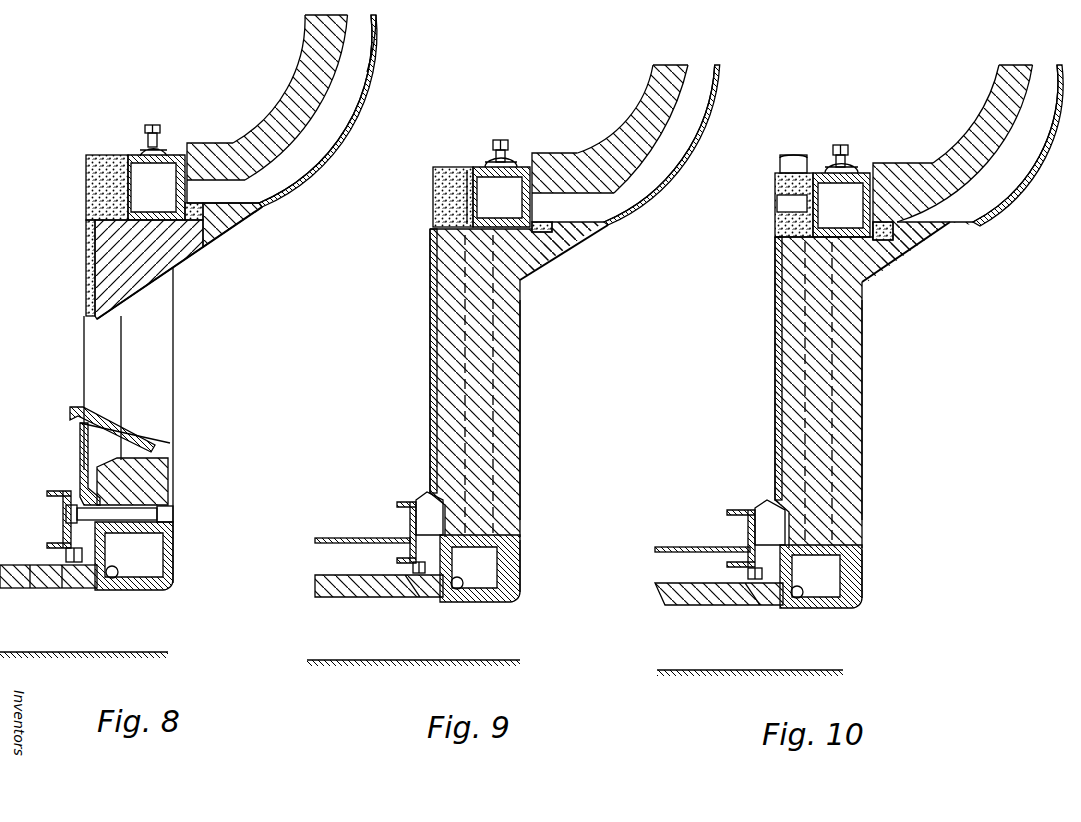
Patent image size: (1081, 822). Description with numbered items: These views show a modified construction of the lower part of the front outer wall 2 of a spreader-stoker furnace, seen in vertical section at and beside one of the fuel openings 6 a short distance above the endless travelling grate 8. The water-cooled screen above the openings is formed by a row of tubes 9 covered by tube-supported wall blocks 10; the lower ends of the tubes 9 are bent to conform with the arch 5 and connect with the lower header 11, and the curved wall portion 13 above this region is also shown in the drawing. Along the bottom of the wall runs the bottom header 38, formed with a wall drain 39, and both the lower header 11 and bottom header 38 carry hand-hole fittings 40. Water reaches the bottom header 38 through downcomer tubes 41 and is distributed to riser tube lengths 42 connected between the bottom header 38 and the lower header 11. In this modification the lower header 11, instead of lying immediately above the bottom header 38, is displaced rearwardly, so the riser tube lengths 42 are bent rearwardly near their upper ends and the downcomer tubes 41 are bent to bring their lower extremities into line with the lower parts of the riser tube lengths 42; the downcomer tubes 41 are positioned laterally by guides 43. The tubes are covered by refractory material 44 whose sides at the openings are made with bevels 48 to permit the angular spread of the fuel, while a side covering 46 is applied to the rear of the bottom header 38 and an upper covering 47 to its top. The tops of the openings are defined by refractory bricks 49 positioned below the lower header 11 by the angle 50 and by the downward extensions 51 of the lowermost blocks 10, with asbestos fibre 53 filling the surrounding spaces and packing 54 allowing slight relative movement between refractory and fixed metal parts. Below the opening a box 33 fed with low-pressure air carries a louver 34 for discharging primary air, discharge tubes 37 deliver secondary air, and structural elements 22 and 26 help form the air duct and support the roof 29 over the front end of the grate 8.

In FIG. 8, the front outer wall 2 is at (373, 58).
In FIG. 8, the arch 5 is at (227, 145).
In FIG. 9, the arch 5 is at (593, 232).
In FIG. 10, the arch 5 is at (960, 210).
In FIG. 8, the openings 6 is at (162, 332).
In FIG. 8, the endless travelling grate 8 is at (133, 652).
In FIG. 9, the endless travelling grate 8 is at (452, 660).
In FIG. 10, the endless travelling grate 8 is at (777, 670).
In FIG. 8, the tubes 9 is at (345, 98).
In FIG. 9, the tubes 9 is at (695, 100).
In FIG. 10, the tubes 9 is at (990, 170).
In FIG. 8, the tube-supported wall blocks 10 is at (355, 128).
In FIG. 9, the tube-supported wall blocks 10 is at (712, 128).
In FIG. 10, the tube-supported wall blocks 10 is at (1028, 170).
In FIG. 8, the lower header 11 is at (145, 175).
In FIG. 9, the lower header 11 is at (488, 190).
In FIG. 10, the lower header 11 is at (823, 197).
In FIG. 8, the curved wall 13 is at (300, 90).
In FIG. 9, the curved wall 13 is at (643, 112).
In FIG. 10, the curved wall 13 is at (970, 140).
In FIG. 8, the structural element 22 is at (58, 492).
In FIG. 9, the structural element 22 is at (407, 503).
In FIG. 10, the structural element 22 is at (740, 512).
In FIG. 9, the structural element 26 is at (318, 538).
In FIG. 10, the structural element 26 is at (670, 548).
In FIG. 8, the roof 29 is at (17, 566).
In FIG. 9, the roof 29 is at (360, 577).
In FIG. 10, the roof 29 is at (698, 590).
In FIG. 8, the box 33 is at (100, 450).
In FIG. 8, the louver 34 is at (100, 427).
In FIG. 8, the discharge tubes 37 is at (163, 517).
In FIG. 8, the bottom header 38 is at (140, 553).
In FIG. 9, the bottom header 38 is at (480, 560).
In FIG. 10, the bottom header 38 is at (827, 565).
In FIG. 8, the wall drain 39 is at (115, 578).
In FIG. 9, the wall drain 39 is at (457, 593).
In FIG. 10, the wall drain 39 is at (803, 600).
In FIG. 9, the hand-hole fittings 40 is at (505, 163).
In FIG. 10, the hand-hole fittings 40 is at (838, 170).
In FIG. 10, the downcomer tubes 41 is at (818, 337).
In FIG. 9, the riser tube lengths 42 is at (480, 355).
In FIG. 10, the guides 43 is at (785, 202).
In FIG. 8, the refractory material 44 is at (173, 390).
In FIG. 9, the refractory material 44 is at (503, 423).
In FIG. 10, the refractory material 44 is at (845, 428).
In FIG. 9, the side covering 46 is at (510, 573).
In FIG. 10, the side covering 46 is at (853, 598).
In FIG. 8, the upper covering 47 is at (150, 490).
In FIG. 8, the bevels 48 is at (155, 361).
In FIG. 8, the refractory bricks 49 is at (170, 248).
In FIG. 8, the angle 50 is at (87, 307).
In FIG. 8, the downward extensions 51 is at (230, 220).
In FIG. 8, the asbestos fibre 53 is at (83, 247).
In FIG. 9, the asbestos fibre 53 is at (522, 213).
In FIG. 10, the asbestos fibre 53 is at (778, 233).
In FIG. 9, the packing 54 is at (428, 372).
In FIG. 10, the packing 54 is at (773, 342).